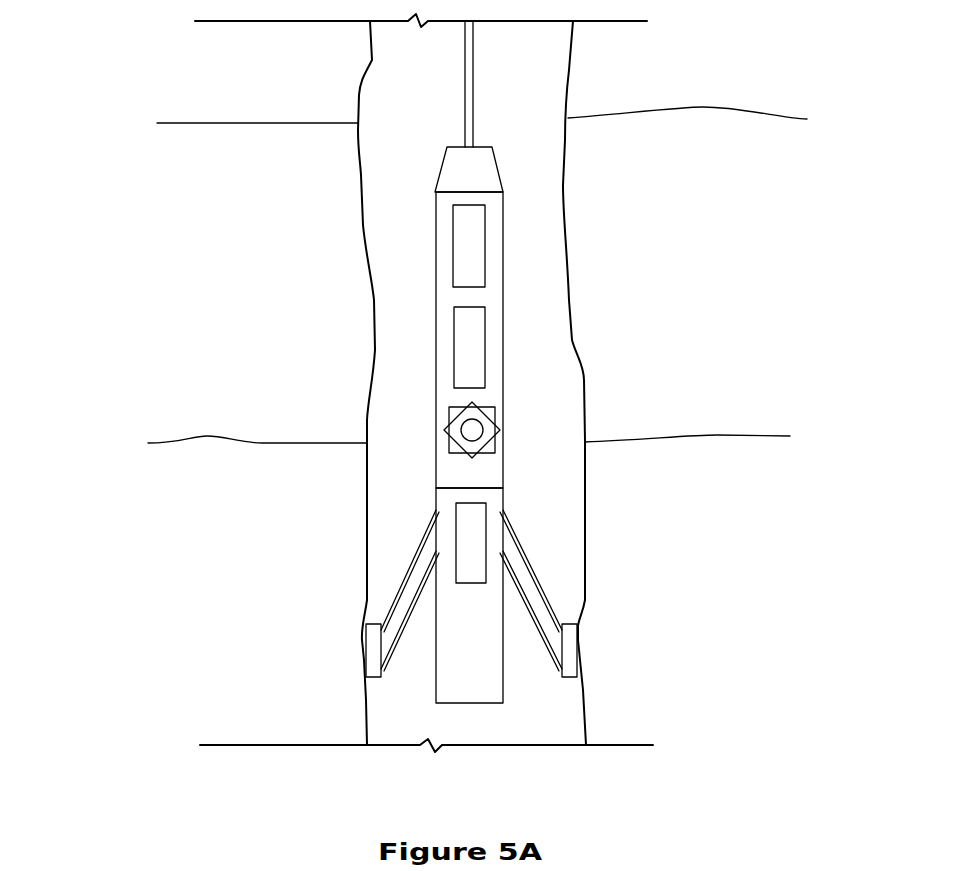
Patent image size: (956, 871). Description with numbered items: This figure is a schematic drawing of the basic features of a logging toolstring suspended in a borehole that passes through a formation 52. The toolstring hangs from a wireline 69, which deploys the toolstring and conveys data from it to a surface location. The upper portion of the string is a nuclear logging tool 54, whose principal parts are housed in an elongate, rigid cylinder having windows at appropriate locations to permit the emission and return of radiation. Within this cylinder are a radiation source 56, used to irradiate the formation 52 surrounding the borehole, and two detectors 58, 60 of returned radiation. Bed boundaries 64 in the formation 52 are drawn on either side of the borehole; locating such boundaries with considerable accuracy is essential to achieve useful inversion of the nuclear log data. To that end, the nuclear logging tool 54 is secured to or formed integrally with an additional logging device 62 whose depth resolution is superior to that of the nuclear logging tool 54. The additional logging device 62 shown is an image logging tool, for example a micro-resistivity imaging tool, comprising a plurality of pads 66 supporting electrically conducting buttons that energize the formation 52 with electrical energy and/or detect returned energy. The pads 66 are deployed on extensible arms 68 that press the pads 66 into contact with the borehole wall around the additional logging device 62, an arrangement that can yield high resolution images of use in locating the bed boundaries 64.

The formation 52 is at (283, 278).
The nuclear logging tool 54 is at (470, 444).
The radiation source 56 is at (490, 420).
The detector 58 is at (478, 248).
The detector 60 is at (480, 325).
The additional logging device 62 is at (465, 690).
The bed boundary 64 is at (203, 122).
The pad 66 is at (366, 657).
The extensible arm 68 is at (407, 575).
The wireline 69 is at (473, 89).